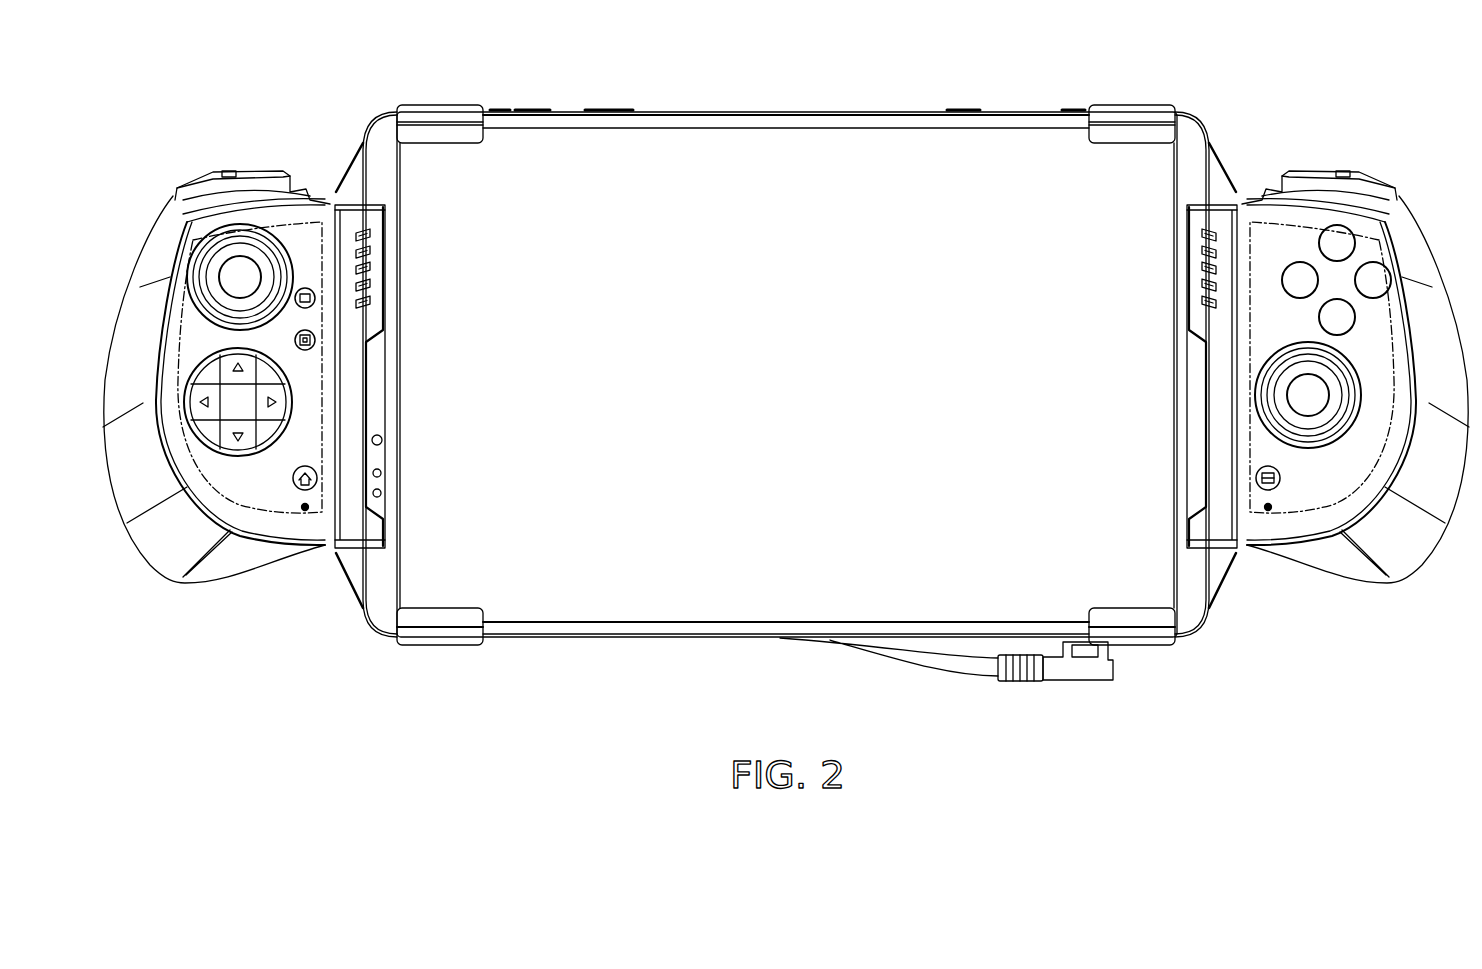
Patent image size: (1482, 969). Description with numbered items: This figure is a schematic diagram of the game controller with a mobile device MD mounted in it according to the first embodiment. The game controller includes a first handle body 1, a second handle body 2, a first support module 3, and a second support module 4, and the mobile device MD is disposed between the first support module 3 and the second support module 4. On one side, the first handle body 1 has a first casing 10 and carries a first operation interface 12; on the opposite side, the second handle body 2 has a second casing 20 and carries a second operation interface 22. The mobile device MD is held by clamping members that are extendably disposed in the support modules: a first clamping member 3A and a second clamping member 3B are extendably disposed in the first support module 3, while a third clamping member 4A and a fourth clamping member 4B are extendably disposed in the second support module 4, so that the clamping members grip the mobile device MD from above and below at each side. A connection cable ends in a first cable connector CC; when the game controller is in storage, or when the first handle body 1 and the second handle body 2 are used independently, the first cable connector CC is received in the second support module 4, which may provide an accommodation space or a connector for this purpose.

The mobile device MD is at (795, 170).
The first handle body 1 is at (1331, 363).
The second handle body 2 is at (242, 363).
The first support module 3 is at (1222, 572).
The second support module 4 is at (350, 570).
The first clamping member 3A is at (1130, 113).
The second clamping member 3B is at (1140, 645).
The third clamping member 4A is at (437, 113).
The fourth clamping member 4B is at (437, 645).
The first casing 10 is at (1410, 545).
The first operation interface 12 is at (1298, 190).
The second casing 20 is at (163, 545).
The second operation interface 22 is at (272, 190).
The first cable connector CC is at (1073, 680).